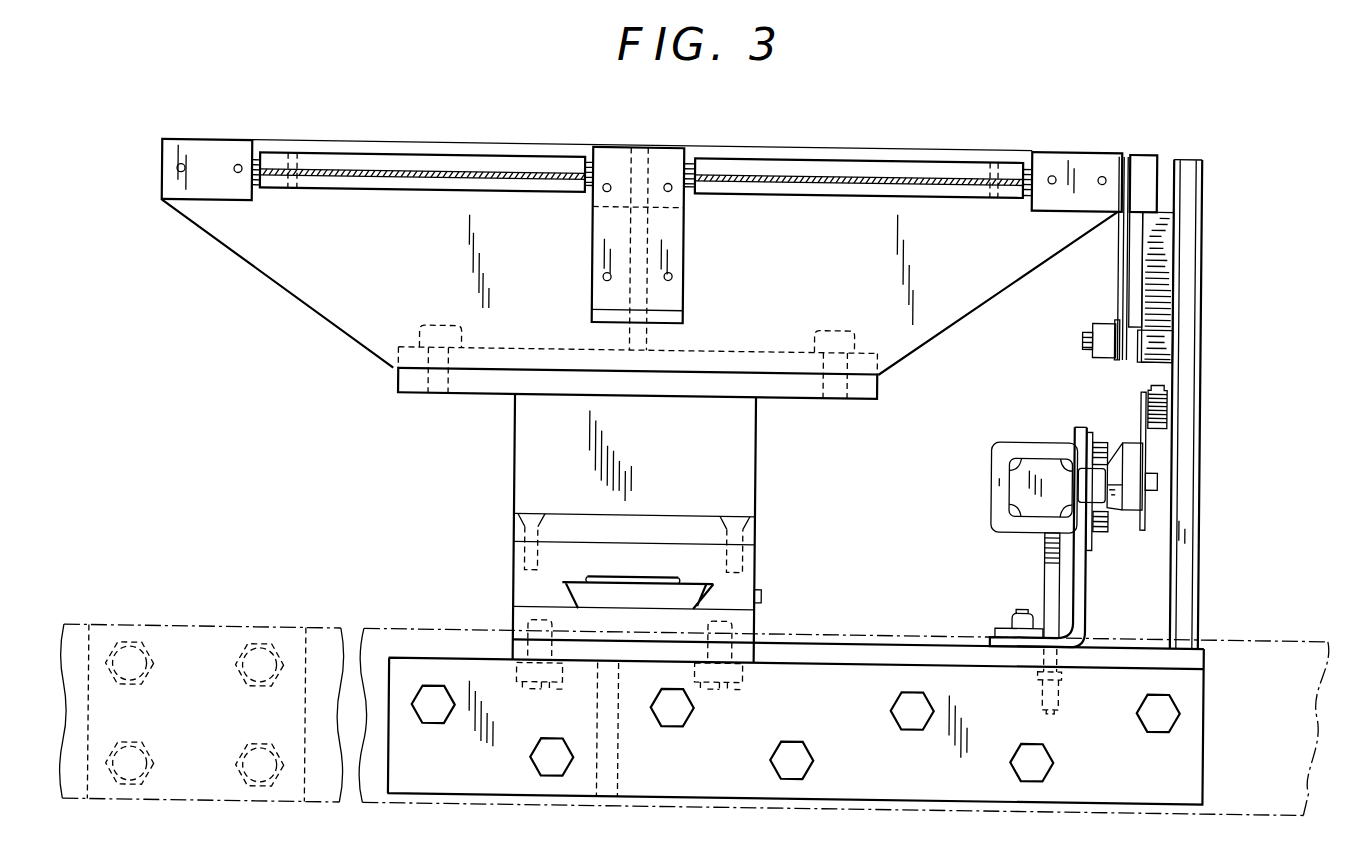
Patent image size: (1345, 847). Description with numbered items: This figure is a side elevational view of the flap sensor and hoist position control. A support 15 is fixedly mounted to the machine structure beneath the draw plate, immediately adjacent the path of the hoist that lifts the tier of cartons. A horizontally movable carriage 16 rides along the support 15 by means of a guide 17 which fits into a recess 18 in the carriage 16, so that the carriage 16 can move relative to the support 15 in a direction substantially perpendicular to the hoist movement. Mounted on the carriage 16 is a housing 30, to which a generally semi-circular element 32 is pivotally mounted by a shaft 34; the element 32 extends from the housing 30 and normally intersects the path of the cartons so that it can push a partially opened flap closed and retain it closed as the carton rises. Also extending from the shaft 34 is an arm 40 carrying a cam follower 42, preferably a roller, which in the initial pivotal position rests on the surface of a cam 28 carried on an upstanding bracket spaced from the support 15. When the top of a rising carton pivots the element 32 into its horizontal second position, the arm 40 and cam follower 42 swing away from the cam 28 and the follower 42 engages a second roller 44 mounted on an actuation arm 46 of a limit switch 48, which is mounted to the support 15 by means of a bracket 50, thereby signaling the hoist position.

The support 15 is at (218, 630).
The carriage 16 is at (756, 474).
The guide 17 is at (648, 615).
The recess 18 is at (722, 590).
The cam 28 is at (1163, 234).
The housing 30 is at (262, 268).
The semi-circular element 32 is at (791, 182).
The shaft 34 is at (1023, 168).
The arm 40 is at (1117, 268).
The cam follower 42 is at (1162, 330).
The second roller 44 is at (1162, 377).
The actuation arm 46 is at (1140, 414).
The limit switch 48 is at (1033, 441).
The bracket 50 is at (1082, 423).